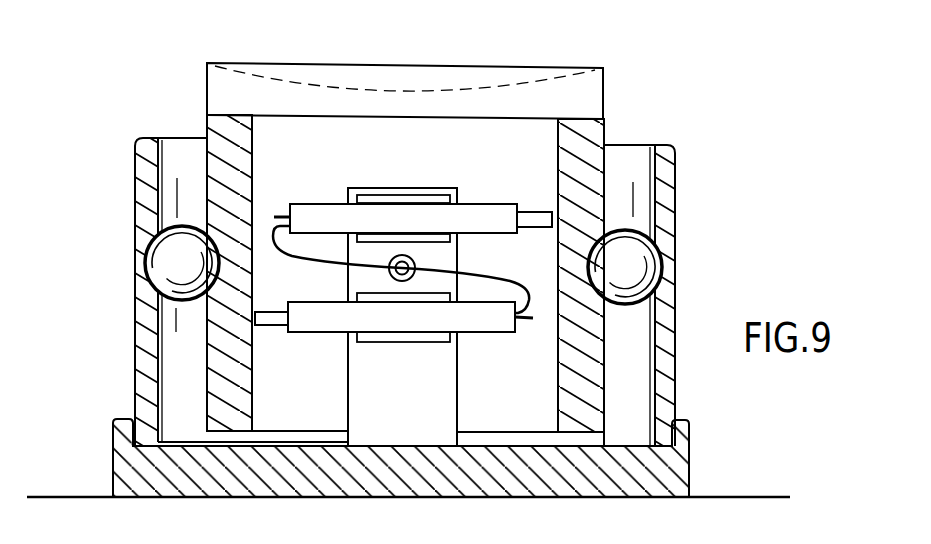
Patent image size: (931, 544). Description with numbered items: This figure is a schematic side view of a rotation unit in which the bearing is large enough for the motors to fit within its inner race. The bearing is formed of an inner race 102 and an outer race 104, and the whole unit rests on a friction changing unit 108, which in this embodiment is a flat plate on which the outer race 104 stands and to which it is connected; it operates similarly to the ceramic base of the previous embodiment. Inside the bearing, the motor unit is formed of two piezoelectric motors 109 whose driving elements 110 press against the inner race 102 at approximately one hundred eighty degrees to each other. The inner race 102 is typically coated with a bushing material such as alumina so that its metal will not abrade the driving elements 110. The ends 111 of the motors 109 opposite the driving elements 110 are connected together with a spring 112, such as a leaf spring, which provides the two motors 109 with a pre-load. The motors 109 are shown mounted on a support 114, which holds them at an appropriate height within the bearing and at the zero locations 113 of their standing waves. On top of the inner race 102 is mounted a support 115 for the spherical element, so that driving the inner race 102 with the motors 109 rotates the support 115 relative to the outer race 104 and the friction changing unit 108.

The inner race 102 is at (583, 153).
The outer race 104 is at (670, 212).
The friction changing unit 108 is at (115, 475).
The piezoelectric motors 109 is at (319, 207).
The driving elements 110 is at (528, 218).
The ends 111 is at (287, 208).
The spring 112 is at (475, 269).
The zero locations 113 is at (455, 217).
The support 114 is at (440, 391).
The support 115 is at (225, 88).